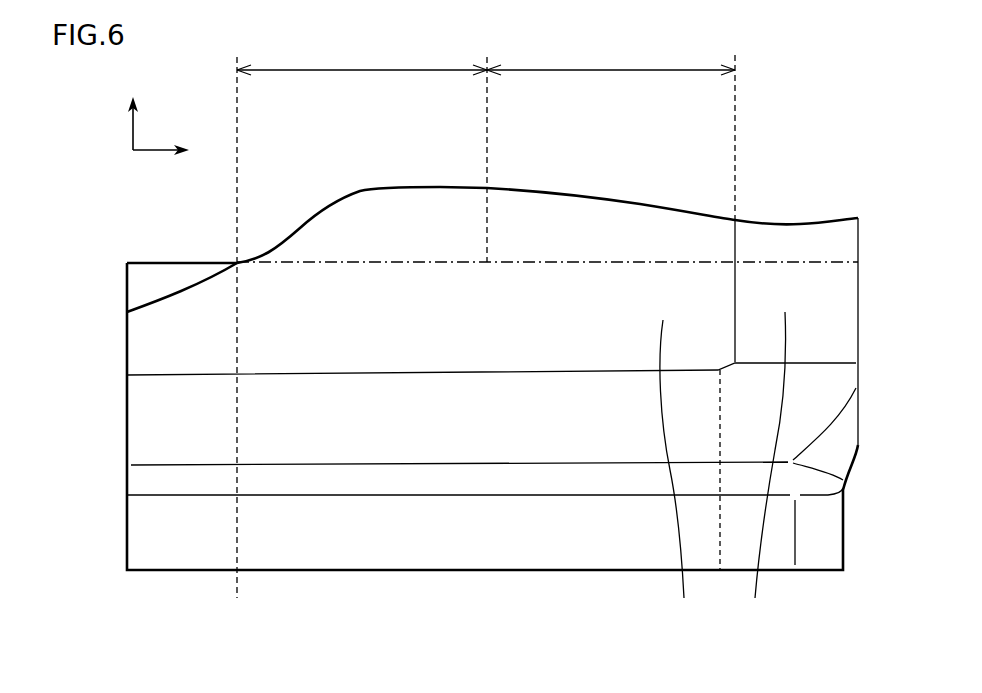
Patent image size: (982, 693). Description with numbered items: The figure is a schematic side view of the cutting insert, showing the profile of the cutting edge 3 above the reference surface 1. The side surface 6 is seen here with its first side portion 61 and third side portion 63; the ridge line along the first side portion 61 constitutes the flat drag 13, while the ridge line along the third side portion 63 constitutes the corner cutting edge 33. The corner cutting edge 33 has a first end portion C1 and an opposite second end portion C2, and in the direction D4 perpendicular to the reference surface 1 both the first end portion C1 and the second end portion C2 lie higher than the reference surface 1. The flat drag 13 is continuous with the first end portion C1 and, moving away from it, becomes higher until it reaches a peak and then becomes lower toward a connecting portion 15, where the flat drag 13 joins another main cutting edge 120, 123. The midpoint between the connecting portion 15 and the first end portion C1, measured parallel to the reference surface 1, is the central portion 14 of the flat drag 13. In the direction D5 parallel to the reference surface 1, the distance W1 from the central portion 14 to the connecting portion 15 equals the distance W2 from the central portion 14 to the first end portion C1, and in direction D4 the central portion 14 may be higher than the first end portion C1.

The reference surface 1 is at (167, 262).
The cutting edge 3 is at (868, 124).
The side surface 6 is at (775, 622).
The flat drag 13 is at (636, 203).
The central portion 14 is at (487, 188).
The connecting portion 15 is at (237, 263).
The corner cutting edge 33 is at (793, 222).
The first side portion 61 is at (677, 473).
The third side portion 63 is at (765, 469).
The another main cutting edge 120 is at (160, 287).
The another main cutting edge 123 is at (175, 298).
The first end portion C1 is at (735, 218).
The second end portion C2 is at (858, 218).
The distance W1 is at (362, 58).
The distance W2 is at (611, 58).
The direction D4 is at (133, 134).
The direction D5 is at (145, 152).